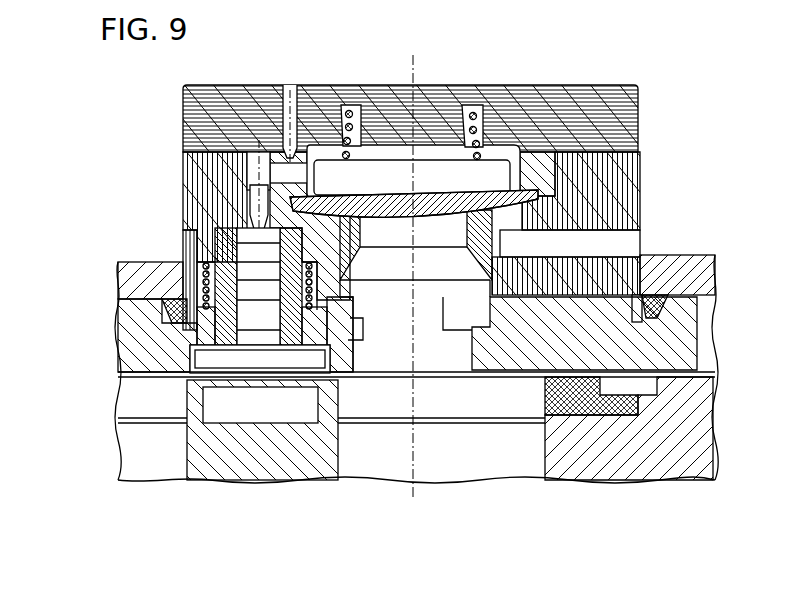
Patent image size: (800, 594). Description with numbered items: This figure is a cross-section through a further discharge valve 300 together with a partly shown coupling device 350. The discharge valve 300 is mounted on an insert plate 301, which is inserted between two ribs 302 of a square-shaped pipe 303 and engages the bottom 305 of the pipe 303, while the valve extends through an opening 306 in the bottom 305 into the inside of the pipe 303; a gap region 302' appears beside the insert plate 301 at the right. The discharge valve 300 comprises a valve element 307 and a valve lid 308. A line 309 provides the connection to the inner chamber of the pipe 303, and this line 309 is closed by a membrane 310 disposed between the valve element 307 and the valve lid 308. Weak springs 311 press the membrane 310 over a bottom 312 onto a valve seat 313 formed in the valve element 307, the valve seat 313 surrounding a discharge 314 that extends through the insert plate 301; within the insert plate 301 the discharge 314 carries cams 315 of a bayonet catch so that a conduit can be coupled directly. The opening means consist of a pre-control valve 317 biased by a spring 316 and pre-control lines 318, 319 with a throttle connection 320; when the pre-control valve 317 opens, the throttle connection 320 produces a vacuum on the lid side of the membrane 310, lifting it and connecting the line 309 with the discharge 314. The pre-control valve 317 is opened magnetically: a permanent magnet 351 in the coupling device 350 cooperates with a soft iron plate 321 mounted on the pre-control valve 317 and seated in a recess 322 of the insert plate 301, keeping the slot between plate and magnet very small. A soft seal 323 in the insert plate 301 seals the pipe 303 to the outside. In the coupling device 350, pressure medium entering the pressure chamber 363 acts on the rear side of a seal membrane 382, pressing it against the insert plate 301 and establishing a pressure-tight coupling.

The discharge valve 300 is at (165, 157).
The insert plate 301 is at (672, 312).
The ribs 302 is at (444, 376).
The gap 302' is at (740, 367).
The square-shaped pipe 303 is at (704, 135).
The bottom 305 is at (134, 280).
The opening 306 is at (646, 258).
The valve element 307 is at (617, 198).
The valve lid 308 is at (622, 103).
The line 309 is at (596, 238).
The membrane 310 is at (560, 185).
The weak springs 311 is at (470, 148).
The bottom 312 is at (432, 178).
The valve seat 313 is at (514, 195).
The discharge 314 is at (406, 331).
The cams 315 is at (362, 340).
The spring 316 is at (190, 274).
The pre-control valve 317 is at (245, 240).
The pre-control line 318 is at (287, 84).
The pre-control line 319 is at (257, 198).
The throttle connection 320 is at (304, 150).
The soft iron plate 321 is at (215, 370).
The recess 322 is at (206, 358).
The soft seal 323 is at (158, 314).
The coupling device 350 is at (603, 483).
The permanent magnet 351 is at (236, 412).
The pressure chamber 363 is at (488, 464).
The seal membrane 382 is at (543, 414).